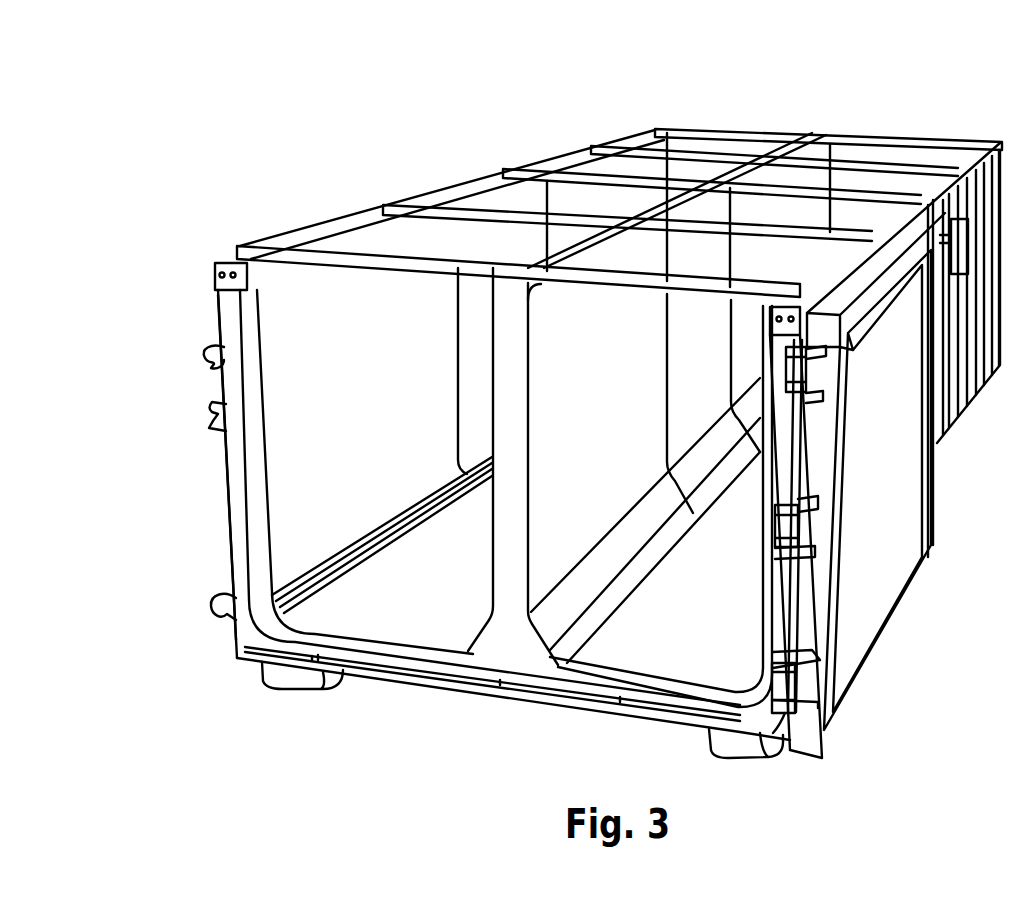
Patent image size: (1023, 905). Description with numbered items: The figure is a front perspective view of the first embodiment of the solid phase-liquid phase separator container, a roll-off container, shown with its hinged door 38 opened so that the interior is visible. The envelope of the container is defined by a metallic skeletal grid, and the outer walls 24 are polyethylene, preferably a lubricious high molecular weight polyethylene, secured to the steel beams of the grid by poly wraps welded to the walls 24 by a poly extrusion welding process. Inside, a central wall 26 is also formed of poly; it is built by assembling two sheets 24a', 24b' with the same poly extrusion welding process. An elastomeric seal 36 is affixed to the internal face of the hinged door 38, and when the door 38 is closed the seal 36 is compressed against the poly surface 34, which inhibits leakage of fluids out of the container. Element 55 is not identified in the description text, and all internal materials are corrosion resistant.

The central wall 26 is at (562, 258).
The liner panels 55 is at (667, 620).
The outer walls 24 is at (380, 432).
The poly surface 34 is at (236, 480).
The hinged door 38 is at (905, 500).
The elastomeric seal 36 is at (974, 337).
The sheet 24a' is at (382, 614).
The sheet 24b' is at (645, 577).